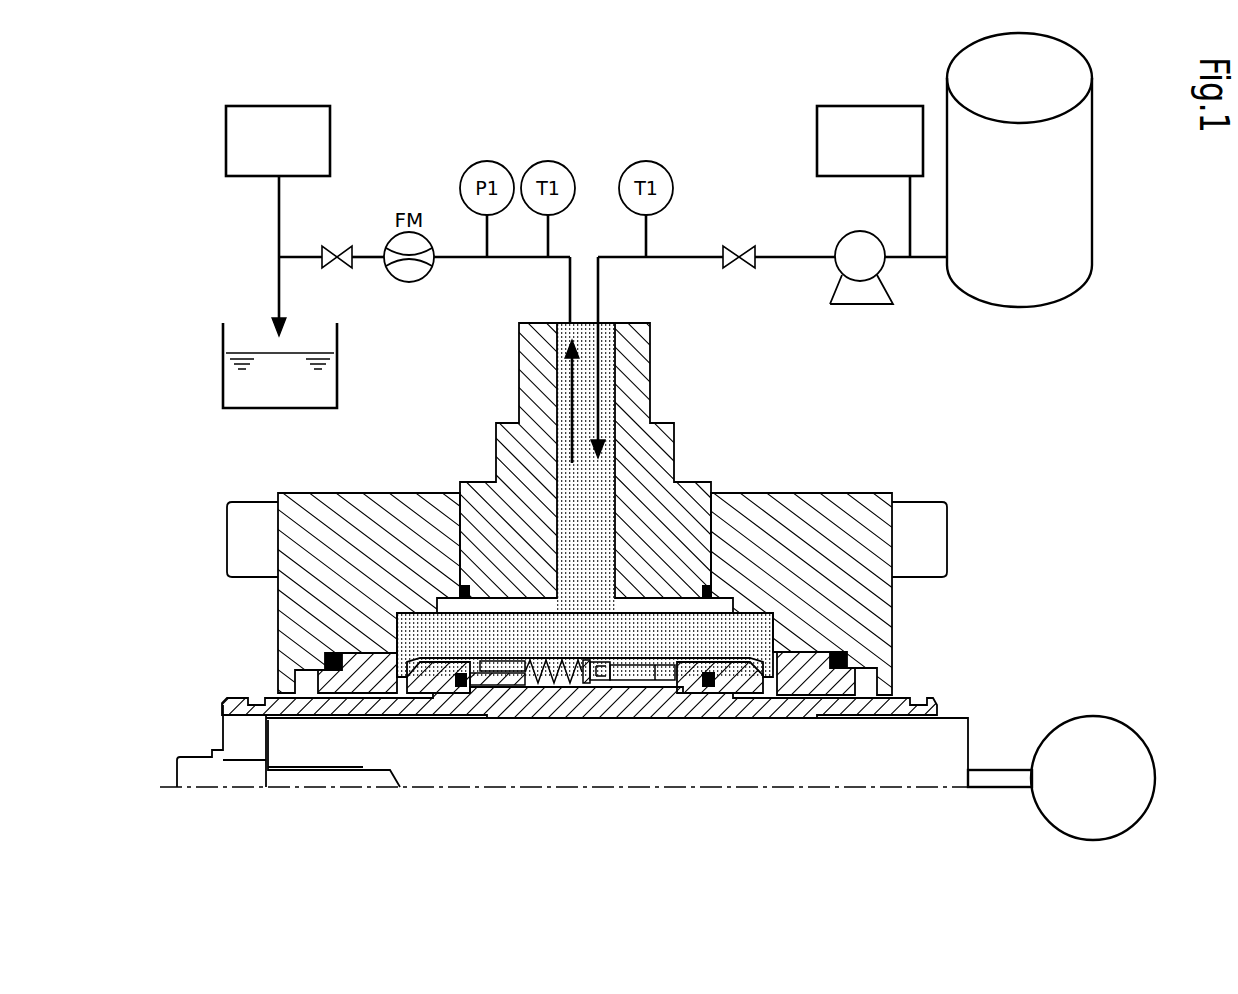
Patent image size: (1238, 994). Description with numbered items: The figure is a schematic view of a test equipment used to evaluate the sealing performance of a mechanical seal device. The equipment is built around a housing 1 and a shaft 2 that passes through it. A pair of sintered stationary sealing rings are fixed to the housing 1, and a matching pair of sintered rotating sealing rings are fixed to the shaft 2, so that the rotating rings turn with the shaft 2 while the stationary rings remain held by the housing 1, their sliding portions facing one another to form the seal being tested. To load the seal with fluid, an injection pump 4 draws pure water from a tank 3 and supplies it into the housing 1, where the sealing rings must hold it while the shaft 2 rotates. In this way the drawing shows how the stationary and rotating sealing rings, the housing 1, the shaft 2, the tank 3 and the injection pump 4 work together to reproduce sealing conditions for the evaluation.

The housing 1 is at (802, 507).
The shaft 2 is at (908, 765).
The tank 3 is at (1073, 190).
The injection pump 4 is at (858, 296).